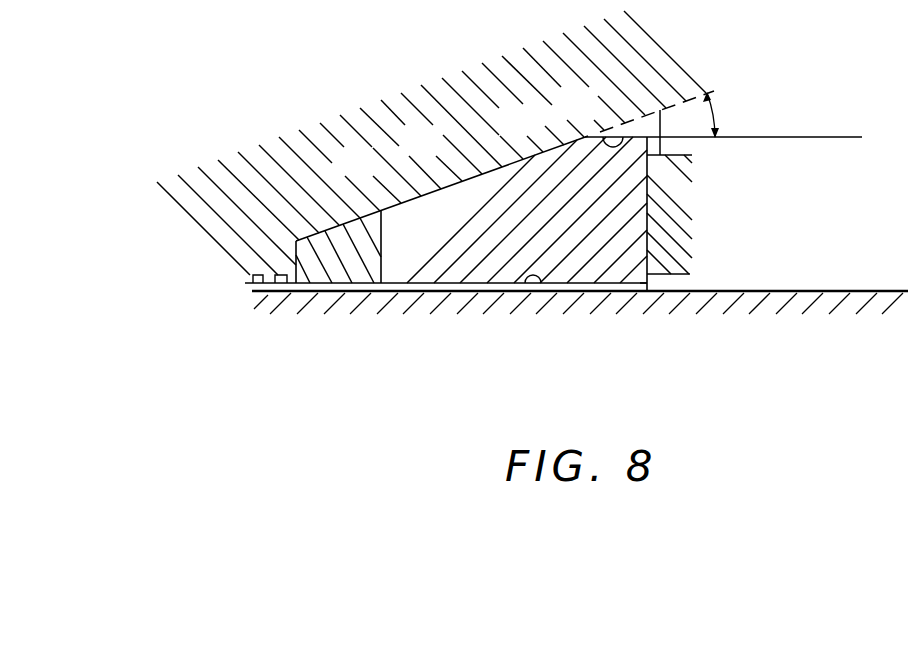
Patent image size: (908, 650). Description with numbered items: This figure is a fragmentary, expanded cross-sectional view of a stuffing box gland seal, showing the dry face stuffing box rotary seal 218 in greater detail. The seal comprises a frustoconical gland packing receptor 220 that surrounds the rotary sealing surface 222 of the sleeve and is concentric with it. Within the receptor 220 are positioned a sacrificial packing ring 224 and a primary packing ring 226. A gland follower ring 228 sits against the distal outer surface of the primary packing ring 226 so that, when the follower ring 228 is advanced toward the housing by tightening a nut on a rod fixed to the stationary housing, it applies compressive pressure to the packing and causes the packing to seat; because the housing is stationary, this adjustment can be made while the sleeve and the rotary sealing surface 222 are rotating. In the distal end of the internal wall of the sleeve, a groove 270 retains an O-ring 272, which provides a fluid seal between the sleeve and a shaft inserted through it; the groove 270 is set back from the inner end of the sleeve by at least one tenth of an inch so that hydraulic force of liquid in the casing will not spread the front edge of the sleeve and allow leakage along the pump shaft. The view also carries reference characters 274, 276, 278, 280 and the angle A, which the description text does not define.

The dry face stuffing box rotary seal 218 is at (426, 98).
The frustoconical gland packing receptor 220 is at (557, 193).
The rotary sealing surface 222 is at (543, 282).
The sacrificial packing ring 224 is at (345, 222).
The primary packing ring 226 is at (643, 265).
The gland follower ring 228 is at (688, 237).
The groove 270 is at (297, 263).
The O-ring 272 is at (478, 178).
The interface line 274 is at (382, 252).
The projections on base 276 is at (263, 293).
The tip of wedge 278 is at (606, 128).
The abutment face 280 is at (648, 197).
The wedge angle A is at (721, 115).